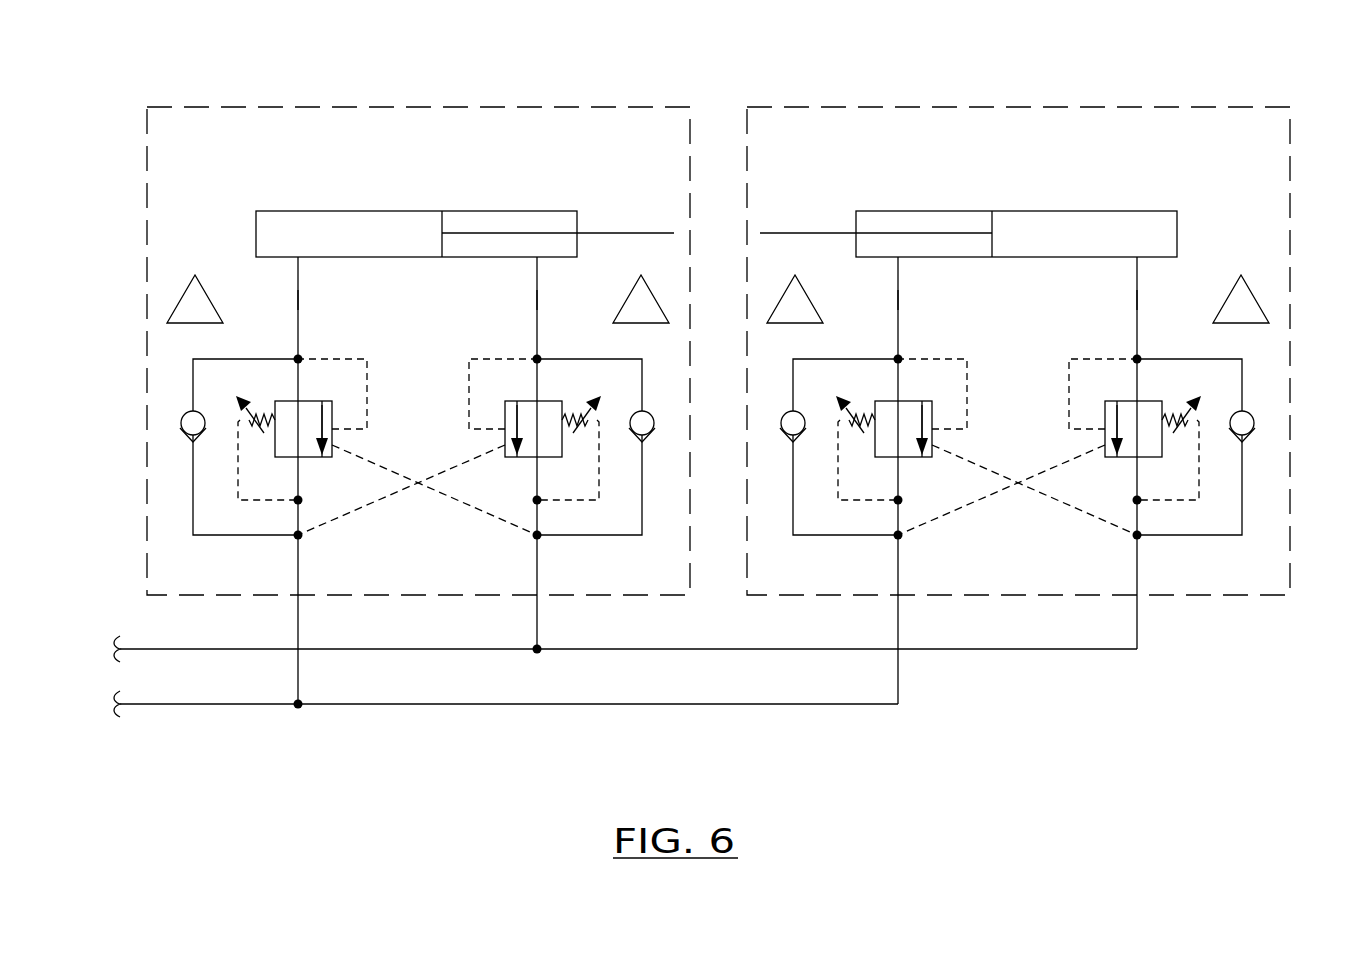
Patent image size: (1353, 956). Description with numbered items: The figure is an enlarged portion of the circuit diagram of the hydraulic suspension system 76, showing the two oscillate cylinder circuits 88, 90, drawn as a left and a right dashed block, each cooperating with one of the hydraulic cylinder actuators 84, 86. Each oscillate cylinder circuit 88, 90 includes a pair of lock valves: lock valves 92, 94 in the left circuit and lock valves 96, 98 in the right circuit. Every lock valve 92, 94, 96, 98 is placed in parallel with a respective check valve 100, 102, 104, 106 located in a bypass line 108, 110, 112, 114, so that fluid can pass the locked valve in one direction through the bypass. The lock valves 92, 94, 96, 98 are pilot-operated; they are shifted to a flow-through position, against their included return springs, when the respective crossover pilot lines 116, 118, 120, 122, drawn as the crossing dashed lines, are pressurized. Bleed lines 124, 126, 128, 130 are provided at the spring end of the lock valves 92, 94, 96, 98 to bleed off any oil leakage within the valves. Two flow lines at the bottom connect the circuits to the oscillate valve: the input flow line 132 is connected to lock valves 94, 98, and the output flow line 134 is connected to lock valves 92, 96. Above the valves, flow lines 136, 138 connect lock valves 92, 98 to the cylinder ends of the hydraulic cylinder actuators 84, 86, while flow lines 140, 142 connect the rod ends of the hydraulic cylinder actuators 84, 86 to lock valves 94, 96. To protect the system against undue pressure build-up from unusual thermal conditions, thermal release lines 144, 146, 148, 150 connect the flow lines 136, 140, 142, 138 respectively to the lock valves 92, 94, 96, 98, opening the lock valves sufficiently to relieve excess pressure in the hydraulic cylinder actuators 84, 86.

The suspension system 76 is at (1078, 52).
The hydraulic cylinder actuator 84 is at (331, 245).
The hydraulic cylinder actuator 86 is at (1073, 245).
The oscillate cylinder circuit 88 is at (445, 107).
The oscillate cylinder circuit 90 is at (912, 107).
The lock valve 92 is at (285, 441).
The lock valve 94 is at (529, 441).
The lock valve 96 is at (885, 441).
The lock valve 98 is at (1129, 441).
The check valve 100 is at (181, 421).
The check valve 102 is at (655, 420).
The check valve 104 is at (781, 423).
The check valve 106 is at (1255, 418).
The bypass line 108 is at (193, 375).
The bypass line 110 is at (642, 505).
The bypass line 112 is at (793, 520).
The bypass line 114 is at (1242, 378).
The crossover pilot line 116 is at (492, 516).
The crossover pilot line 118 is at (345, 516).
The crossover pilot line 120 is at (1092, 516).
The crossover pilot line 122 is at (945, 516).
The bleed line 124 is at (255, 502).
The bleed line 126 is at (567, 502).
The bleed line 128 is at (855, 502).
The bleed line 130 is at (1167, 502).
The input flow line 132 is at (168, 649).
The output flow line 134 is at (233, 704).
The flow line 136 is at (298, 300).
The flow line 138 is at (1137, 300).
The flow line 140 is at (537, 300).
The flow line 142 is at (898, 300).
The thermal release line 144 is at (352, 359).
The thermal release line 146 is at (487, 359).
The thermal release line 148 is at (952, 359).
The thermal release line 150 is at (1087, 359).